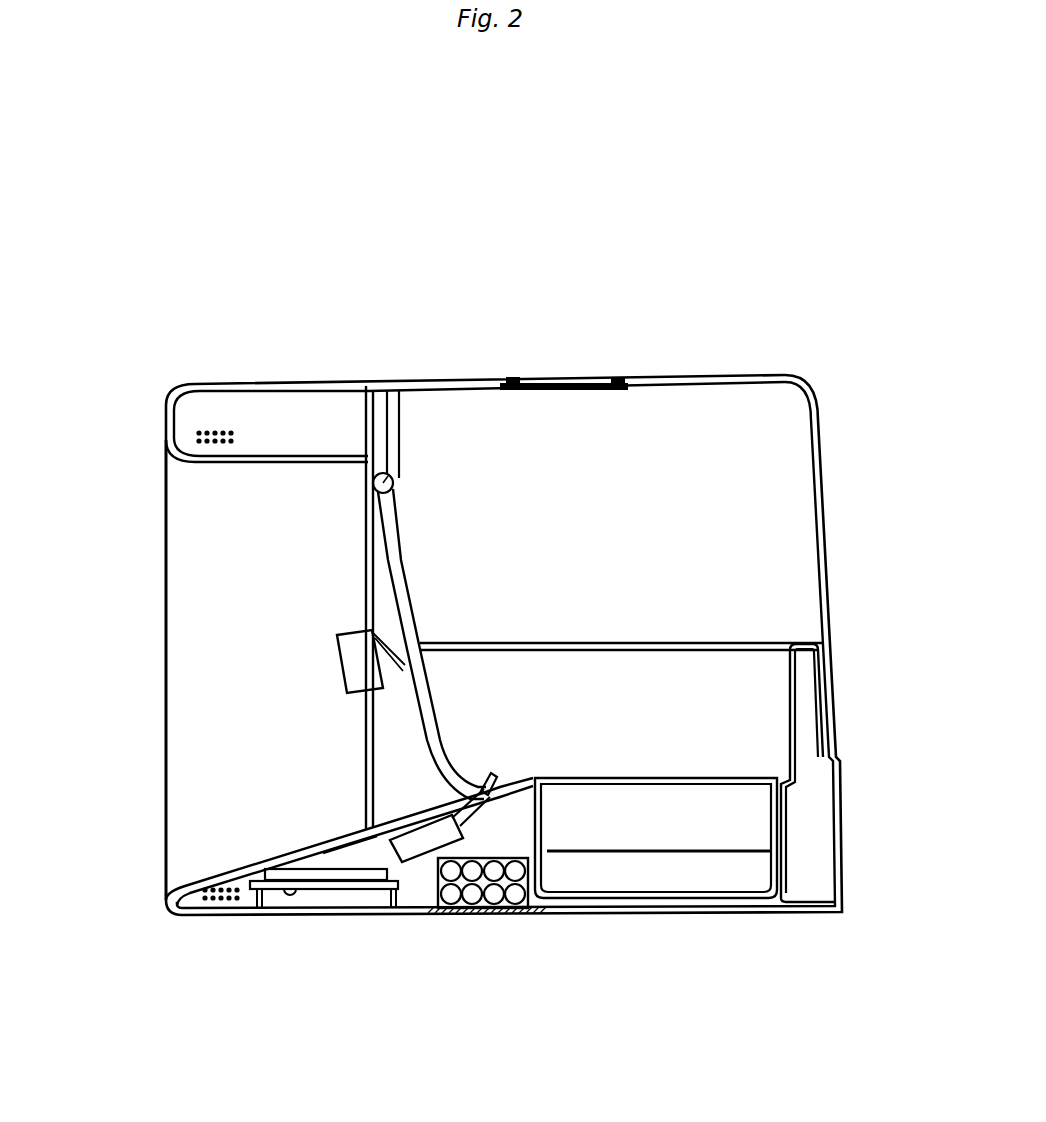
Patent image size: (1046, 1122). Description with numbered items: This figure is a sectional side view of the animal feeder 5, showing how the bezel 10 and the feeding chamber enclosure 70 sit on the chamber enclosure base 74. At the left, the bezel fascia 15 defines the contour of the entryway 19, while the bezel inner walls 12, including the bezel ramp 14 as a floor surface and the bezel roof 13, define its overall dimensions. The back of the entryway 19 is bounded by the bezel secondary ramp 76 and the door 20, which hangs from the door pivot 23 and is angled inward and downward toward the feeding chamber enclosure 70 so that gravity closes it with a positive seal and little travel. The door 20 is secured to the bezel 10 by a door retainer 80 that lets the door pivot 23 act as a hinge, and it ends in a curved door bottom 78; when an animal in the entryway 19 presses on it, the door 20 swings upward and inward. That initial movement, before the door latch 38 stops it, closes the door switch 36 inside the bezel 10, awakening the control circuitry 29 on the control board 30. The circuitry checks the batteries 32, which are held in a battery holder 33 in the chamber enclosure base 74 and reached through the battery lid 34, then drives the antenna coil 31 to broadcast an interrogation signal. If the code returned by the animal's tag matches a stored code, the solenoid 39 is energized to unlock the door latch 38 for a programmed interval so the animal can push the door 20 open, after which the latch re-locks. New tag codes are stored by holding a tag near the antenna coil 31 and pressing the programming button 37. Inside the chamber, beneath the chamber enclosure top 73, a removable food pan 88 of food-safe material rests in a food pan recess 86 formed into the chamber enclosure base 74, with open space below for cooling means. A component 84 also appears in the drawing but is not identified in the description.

The animal feeder 5 is at (700, 310).
The bezel 10 is at (165, 366).
The bezel inner walls 12 is at (230, 505).
The bezel roof 13 is at (228, 462).
The bezel ramp 14 is at (283, 847).
The bezel fascia 15 is at (167, 418).
The entryway 19 is at (263, 673).
The door 20 is at (385, 553).
The door pivot 23 is at (376, 382).
The control circuitry 29 is at (383, 889).
The control board 30 is at (360, 890).
The antenna coil 31 is at (225, 427).
The batteries 32 is at (463, 912).
The battery holder 33 is at (547, 915).
The battery lid 34 is at (508, 912).
The door switch 36 is at (343, 650).
The programming button 37 is at (279, 889).
The door latch 38 is at (500, 780).
The solenoid 39 is at (408, 838).
The feeding chamber enclosure 70 is at (837, 466).
The chamber enclosure top 73 is at (650, 372).
The chamber enclosure base 74 is at (852, 778).
The bezel secondary ramp 76 is at (380, 816).
The door bottom 78 is at (417, 753).
The door retainer 80 is at (406, 417).
The button 84 is at (557, 380).
The food pan recess 86 is at (650, 882).
The food pan 88 is at (720, 832).